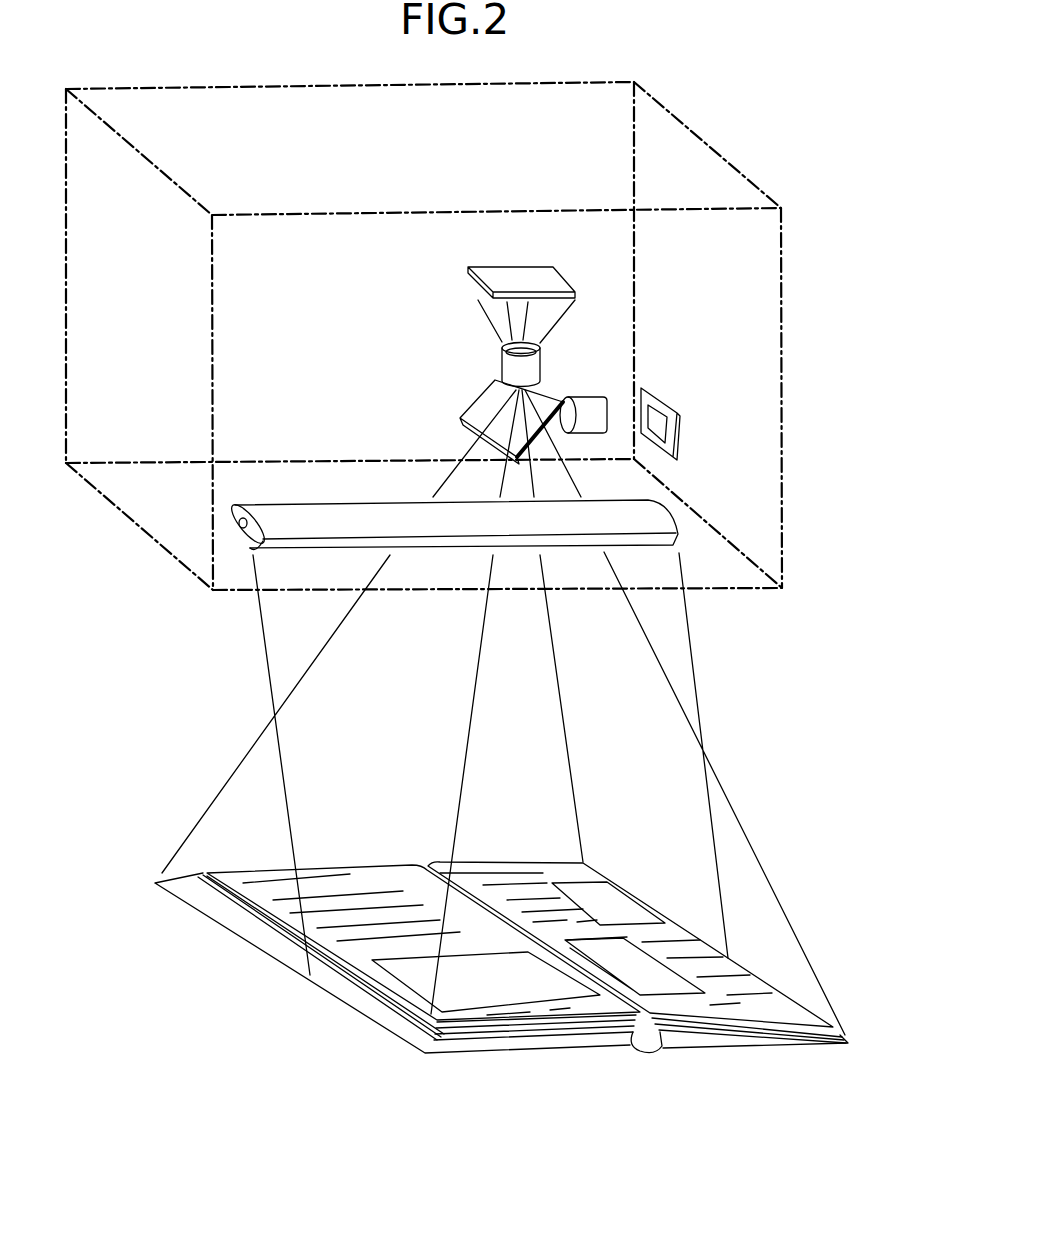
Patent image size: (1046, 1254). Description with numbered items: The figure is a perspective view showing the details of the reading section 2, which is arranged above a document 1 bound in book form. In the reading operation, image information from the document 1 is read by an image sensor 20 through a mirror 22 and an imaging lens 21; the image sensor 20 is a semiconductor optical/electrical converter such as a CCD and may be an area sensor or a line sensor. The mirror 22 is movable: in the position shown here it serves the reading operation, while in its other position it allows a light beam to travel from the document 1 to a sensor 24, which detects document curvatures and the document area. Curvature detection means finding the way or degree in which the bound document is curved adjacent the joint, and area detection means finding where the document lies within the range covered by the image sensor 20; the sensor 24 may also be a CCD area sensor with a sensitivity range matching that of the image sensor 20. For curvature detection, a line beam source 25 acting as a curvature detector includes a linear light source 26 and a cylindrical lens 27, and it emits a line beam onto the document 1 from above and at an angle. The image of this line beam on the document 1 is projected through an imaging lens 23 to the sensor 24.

The document 1 is at (370, 1013).
The reading section 2 is at (138, 528).
The image sensor 20 is at (677, 420).
The imaging lens 21 is at (598, 393).
The mirror 22 is at (462, 407).
The imaging lens 23 is at (502, 352).
The sensor 24 is at (560, 270).
The line beam source 25 is at (270, 503).
The linear light source 26 is at (238, 518).
The cylindrical lens 27 is at (248, 552).